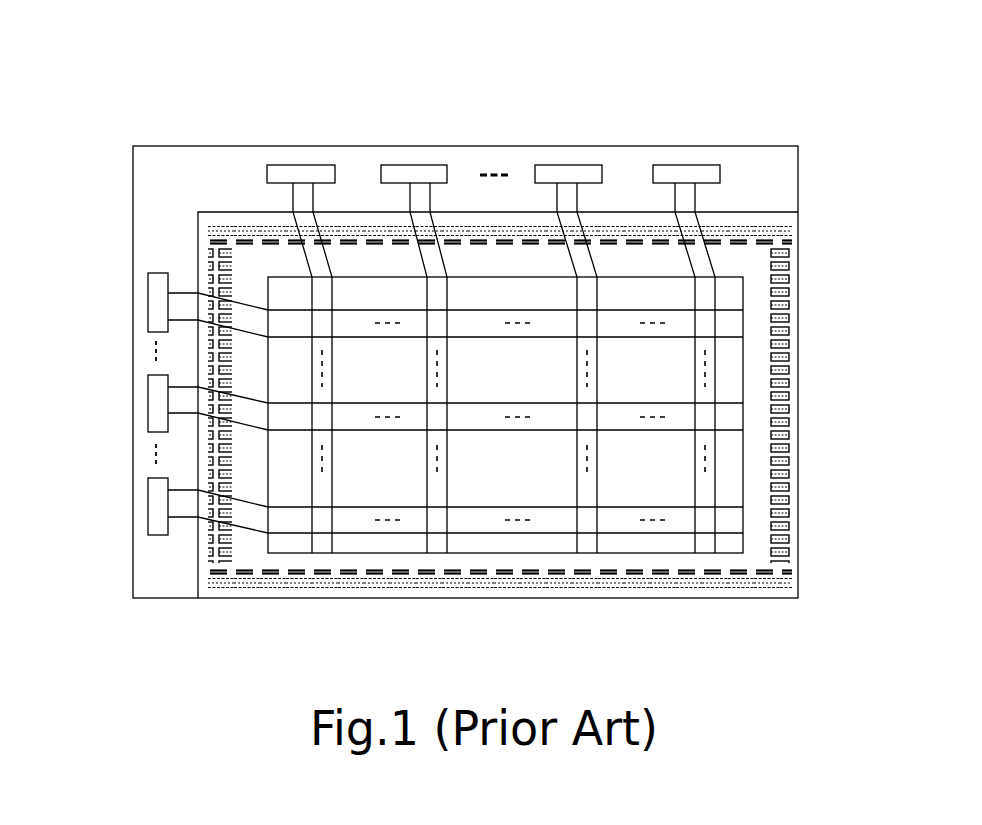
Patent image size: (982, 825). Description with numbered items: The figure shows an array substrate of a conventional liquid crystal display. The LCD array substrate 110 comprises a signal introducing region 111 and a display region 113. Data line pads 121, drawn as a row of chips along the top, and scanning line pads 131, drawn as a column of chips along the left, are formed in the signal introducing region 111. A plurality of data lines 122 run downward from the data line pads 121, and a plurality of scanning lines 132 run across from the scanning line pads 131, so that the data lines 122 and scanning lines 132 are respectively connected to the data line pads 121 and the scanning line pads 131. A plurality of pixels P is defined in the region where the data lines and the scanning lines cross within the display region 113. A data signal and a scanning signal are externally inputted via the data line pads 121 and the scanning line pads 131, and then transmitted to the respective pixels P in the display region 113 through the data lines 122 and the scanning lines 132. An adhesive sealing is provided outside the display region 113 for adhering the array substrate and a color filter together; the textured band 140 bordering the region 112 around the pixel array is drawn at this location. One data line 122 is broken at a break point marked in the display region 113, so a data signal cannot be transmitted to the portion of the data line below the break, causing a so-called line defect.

The LCD array substrate 110 is at (122, 133).
The signal introducing region 111 is at (750, 186).
The display region 112 is at (750, 254).
The display region 113 is at (652, 471).
The data line pads 121 is at (410, 175).
The data lines 122 is at (430, 350).
The scanning line pads 131 is at (160, 509).
The scanning lines 132 is at (413, 535).
The sealant / frame band 140 is at (778, 315).